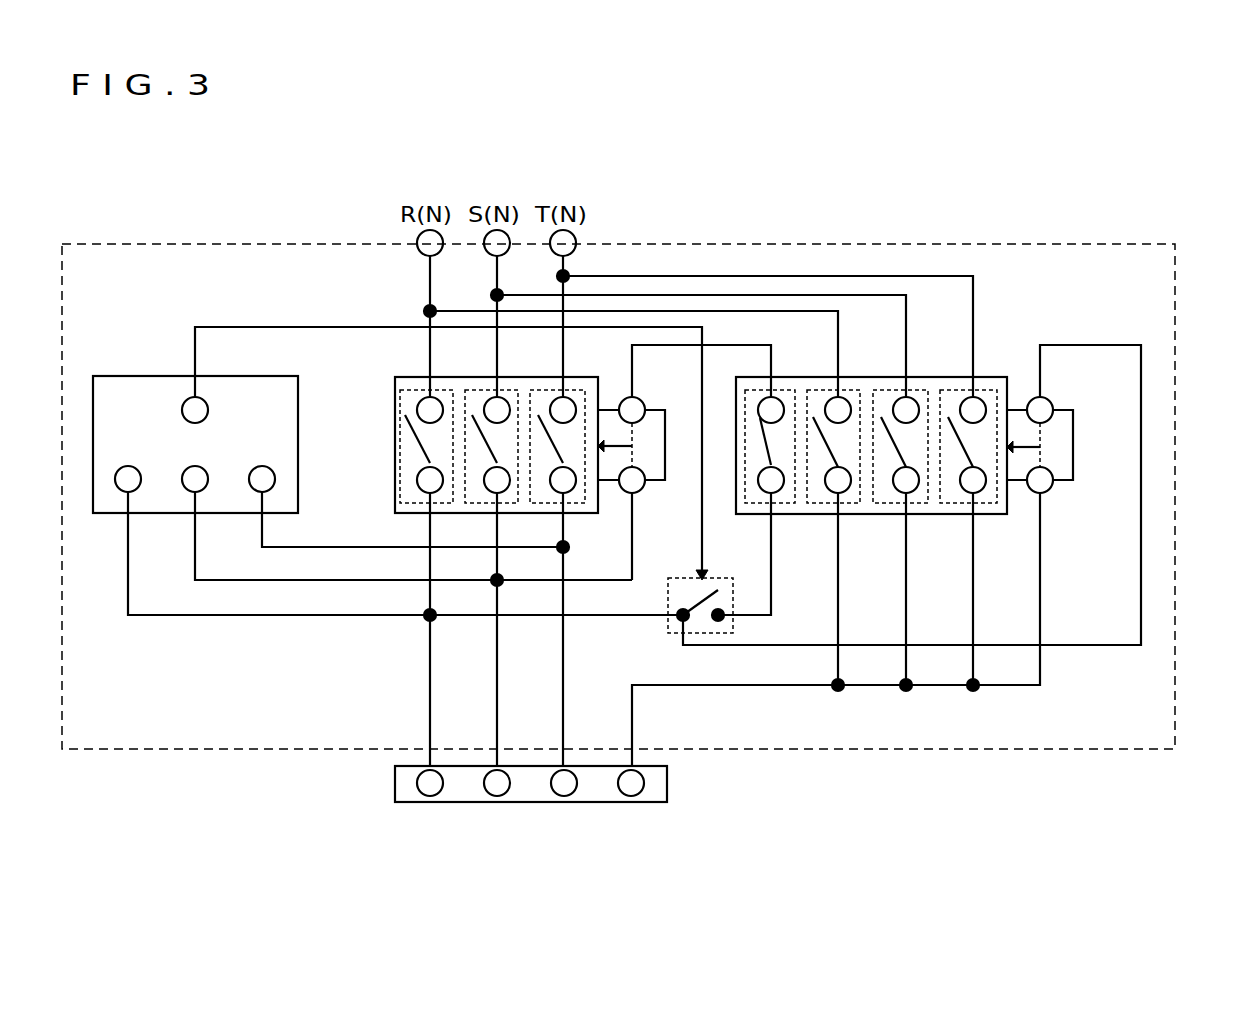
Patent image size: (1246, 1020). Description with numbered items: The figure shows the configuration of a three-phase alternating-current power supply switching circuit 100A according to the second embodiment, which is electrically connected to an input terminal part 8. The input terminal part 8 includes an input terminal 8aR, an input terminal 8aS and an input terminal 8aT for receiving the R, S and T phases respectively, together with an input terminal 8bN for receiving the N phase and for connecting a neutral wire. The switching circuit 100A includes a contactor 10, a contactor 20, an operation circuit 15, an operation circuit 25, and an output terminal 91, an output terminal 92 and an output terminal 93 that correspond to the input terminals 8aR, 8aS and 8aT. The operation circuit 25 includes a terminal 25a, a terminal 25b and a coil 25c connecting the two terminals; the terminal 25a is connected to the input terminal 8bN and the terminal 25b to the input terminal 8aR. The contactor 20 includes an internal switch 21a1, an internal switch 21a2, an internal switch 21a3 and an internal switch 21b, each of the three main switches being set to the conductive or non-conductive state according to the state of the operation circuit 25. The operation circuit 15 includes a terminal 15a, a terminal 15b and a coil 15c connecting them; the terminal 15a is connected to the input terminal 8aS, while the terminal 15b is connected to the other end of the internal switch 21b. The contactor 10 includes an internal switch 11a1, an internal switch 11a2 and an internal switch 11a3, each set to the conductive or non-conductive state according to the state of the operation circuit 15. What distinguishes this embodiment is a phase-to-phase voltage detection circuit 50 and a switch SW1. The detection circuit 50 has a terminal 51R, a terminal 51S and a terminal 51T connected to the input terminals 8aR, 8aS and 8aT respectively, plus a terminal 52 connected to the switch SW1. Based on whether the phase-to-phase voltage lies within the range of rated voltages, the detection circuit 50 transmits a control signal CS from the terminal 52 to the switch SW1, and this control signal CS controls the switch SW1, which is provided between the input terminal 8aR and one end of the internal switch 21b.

The three-phase alternating-current power supply switching circuit 100A is at (1143, 244).
The output terminal 91 is at (444, 241).
The output terminal 92 is at (510, 241).
The output terminal 93 is at (577, 241).
The control signal CS is at (451, 441).
The phase-to-phase voltage detection circuit 50 is at (283, 376).
The terminal 52 is at (204, 398).
The terminal 51R is at (135, 490).
The terminal 51S is at (202, 490).
The terminal 51T is at (275, 485).
The contactor 10 is at (582, 377).
The internal switch 11a1 is at (452, 482).
The internal switch 11a2 is at (518, 482).
The internal switch 11a3 is at (585, 490).
The operation circuit 15 is at (667, 442).
The terminal 15a is at (637, 493).
The terminal 15b is at (643, 400).
The coil 15c is at (634, 452).
The switch SW1 is at (733, 597).
The contactor 20 is at (985, 377).
The internal switch 21b is at (795, 503).
The internal switch 21a1 is at (860, 503).
The internal switch 21a2 is at (928, 503).
The internal switch 21a3 is at (997, 503).
The operation circuit 25 is at (1073, 412).
The terminal 25a is at (1050, 490).
The terminal 25b is at (1050, 398).
The coil 25c is at (1043, 440).
The input terminal part 8 is at (667, 787).
The input terminal 8aR is at (442, 790).
The input terminal 8aS is at (508, 790).
The input terminal 8aT is at (577, 790).
The input terminal 8bN is at (643, 790).